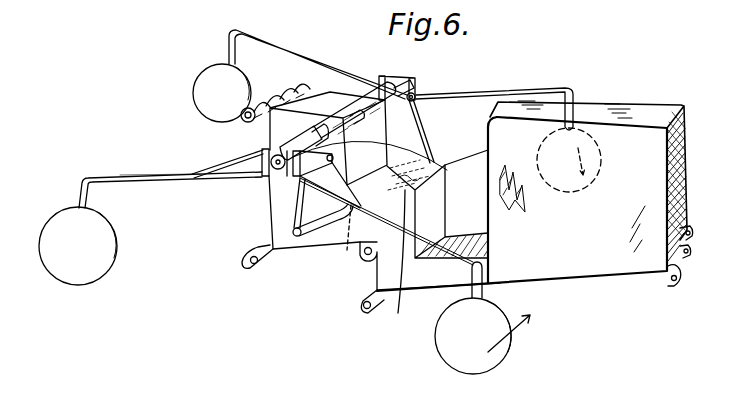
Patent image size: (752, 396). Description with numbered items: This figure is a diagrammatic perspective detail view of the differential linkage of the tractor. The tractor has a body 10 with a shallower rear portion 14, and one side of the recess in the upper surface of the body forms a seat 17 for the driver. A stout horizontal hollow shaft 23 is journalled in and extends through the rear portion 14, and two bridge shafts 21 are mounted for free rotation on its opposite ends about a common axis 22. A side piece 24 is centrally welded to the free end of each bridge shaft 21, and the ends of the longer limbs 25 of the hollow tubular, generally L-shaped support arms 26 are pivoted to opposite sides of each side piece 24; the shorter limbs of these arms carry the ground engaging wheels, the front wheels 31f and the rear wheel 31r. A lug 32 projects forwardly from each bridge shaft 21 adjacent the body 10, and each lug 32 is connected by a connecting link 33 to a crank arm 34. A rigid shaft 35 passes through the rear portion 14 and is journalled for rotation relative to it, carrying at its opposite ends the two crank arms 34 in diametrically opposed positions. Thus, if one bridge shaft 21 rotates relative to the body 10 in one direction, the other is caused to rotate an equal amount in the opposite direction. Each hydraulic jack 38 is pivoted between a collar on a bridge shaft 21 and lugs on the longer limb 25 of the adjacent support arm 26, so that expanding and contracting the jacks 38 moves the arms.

The body 10 is at (580, 270).
The rear portion 14 is at (262, 133).
The seat 17 is at (424, 172).
The bridge shaft 21 is at (416, 96).
The common axis 22 is at (416, 80).
The hollow shaft 23 is at (341, 108).
The side piece 24 is at (388, 76).
The longer limb 25 is at (154, 176).
The support arm 26 is at (282, 47).
The rear wheel 31r is at (213, 85).
The front wheel 31f is at (578, 148).
The lug 32 is at (432, 183).
The connecting link 33 is at (277, 253).
The crank arm 34 is at (318, 236).
The rigid shaft 35 is at (346, 236).
The hydraulic jack 38 is at (245, 162).